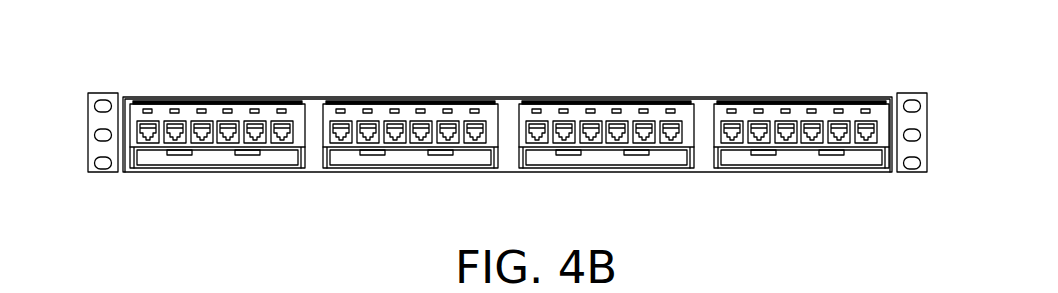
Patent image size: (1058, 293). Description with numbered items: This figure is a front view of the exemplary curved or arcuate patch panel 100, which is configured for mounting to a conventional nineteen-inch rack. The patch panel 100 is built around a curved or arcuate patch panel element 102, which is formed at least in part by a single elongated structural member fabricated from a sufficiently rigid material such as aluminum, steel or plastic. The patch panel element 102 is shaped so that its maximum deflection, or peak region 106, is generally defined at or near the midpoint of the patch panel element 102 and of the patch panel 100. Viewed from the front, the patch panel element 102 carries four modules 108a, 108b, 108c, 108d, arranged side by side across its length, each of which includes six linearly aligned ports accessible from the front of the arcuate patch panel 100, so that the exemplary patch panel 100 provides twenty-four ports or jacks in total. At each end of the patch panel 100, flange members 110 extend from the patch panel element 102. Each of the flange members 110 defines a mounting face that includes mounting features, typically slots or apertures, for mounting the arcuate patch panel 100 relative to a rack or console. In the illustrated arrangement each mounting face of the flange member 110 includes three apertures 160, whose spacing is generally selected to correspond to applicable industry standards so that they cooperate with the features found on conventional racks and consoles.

The patch panel 100 is at (507, 162).
The patch panel element 102 is at (705, 172).
The peak region 106 is at (509, 171).
The module 108a is at (127, 160).
The module 108b is at (410, 169).
The module 108c is at (606, 164).
The module 108d is at (801, 171).
The flange member 110 is at (103, 174).
The aperture 160 is at (915, 107).